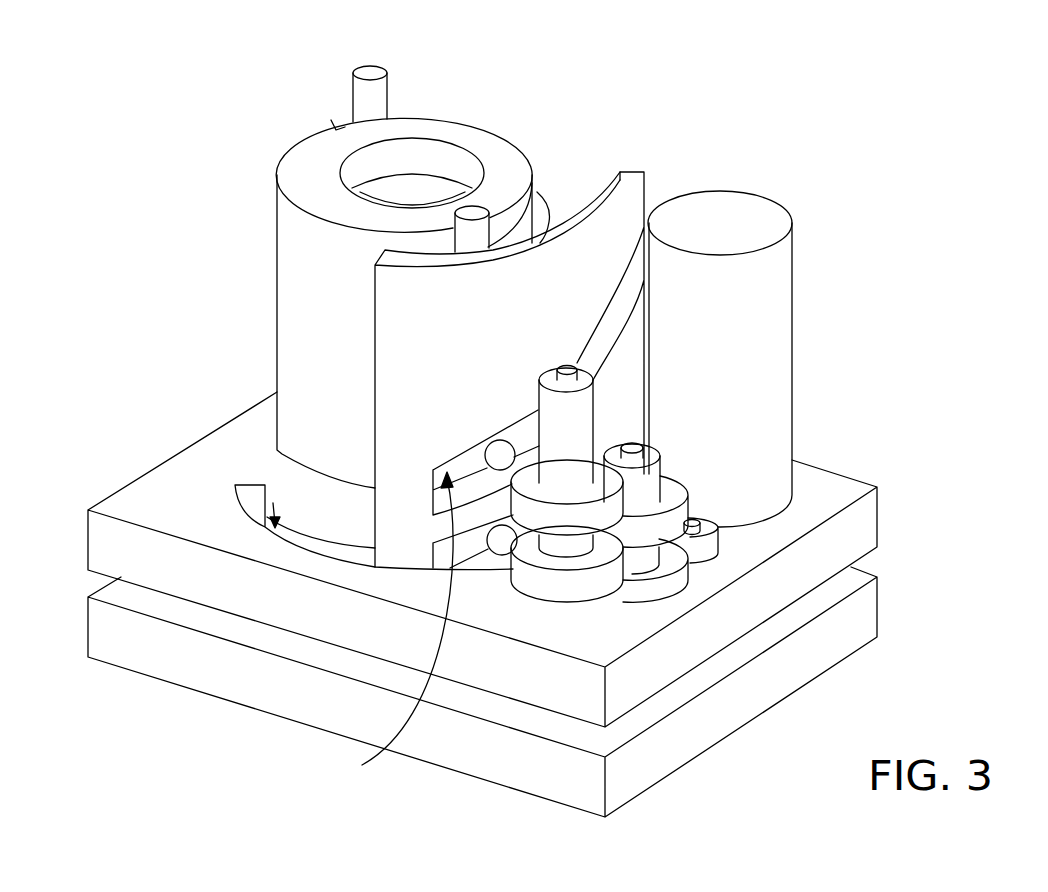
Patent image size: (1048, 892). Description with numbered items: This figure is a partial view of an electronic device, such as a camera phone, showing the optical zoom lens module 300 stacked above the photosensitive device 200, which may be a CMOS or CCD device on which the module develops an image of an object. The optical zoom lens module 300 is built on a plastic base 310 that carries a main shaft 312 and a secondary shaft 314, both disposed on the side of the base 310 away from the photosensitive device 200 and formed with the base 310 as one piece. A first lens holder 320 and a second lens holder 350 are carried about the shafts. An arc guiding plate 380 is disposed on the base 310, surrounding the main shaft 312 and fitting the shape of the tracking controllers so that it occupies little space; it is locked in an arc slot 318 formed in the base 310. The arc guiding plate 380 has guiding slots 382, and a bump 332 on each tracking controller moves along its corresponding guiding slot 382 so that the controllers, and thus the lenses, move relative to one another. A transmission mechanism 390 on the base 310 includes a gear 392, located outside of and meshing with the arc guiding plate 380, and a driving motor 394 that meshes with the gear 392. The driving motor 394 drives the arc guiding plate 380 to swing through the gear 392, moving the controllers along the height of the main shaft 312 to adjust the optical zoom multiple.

The photosensitive device 200 is at (870, 618).
The optical zoom lens module 300 is at (594, 56).
The base 310 is at (870, 528).
The main shaft 312 is at (474, 210).
The secondary shaft 314 is at (362, 71).
The arc slot 318 is at (272, 500).
The first lens holder 320 is at (427, 128).
The bump 332 is at (500, 455).
The second lens holder 350 is at (540, 203).
The arc guiding plate 380 is at (633, 170).
The guiding slot 382 is at (389, 632).
The transmission mechanism 390 is at (873, 373).
The gear 392 is at (687, 512).
The driving motor 394 is at (790, 420).